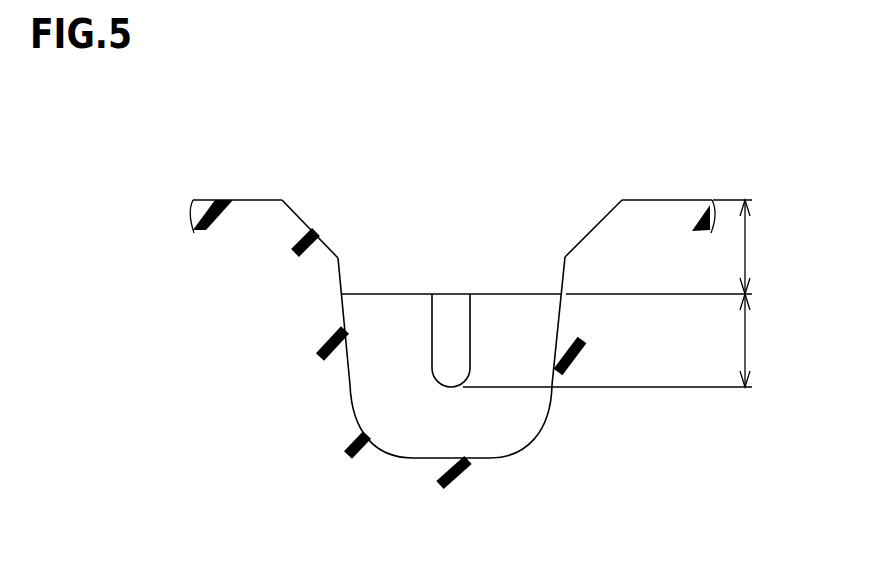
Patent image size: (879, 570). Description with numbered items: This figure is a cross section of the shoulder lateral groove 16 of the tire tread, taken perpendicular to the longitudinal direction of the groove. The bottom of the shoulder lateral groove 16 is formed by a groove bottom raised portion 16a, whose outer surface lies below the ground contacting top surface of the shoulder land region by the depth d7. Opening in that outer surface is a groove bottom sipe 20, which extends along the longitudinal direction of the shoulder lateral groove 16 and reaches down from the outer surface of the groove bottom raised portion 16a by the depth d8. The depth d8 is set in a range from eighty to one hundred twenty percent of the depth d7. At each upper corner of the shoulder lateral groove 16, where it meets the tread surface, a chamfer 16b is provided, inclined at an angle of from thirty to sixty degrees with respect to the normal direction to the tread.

The shoulder lateral groove 16 is at (452, 223).
The groove bottom raised portion 16a is at (383, 294).
The chamfer 16b is at (305, 222).
The groove bottom sipe 20 is at (452, 332).
The depth of the groove bottom raised portion d7 is at (676, 247).
The depth of the groove bottom sipe d8 is at (625, 340).